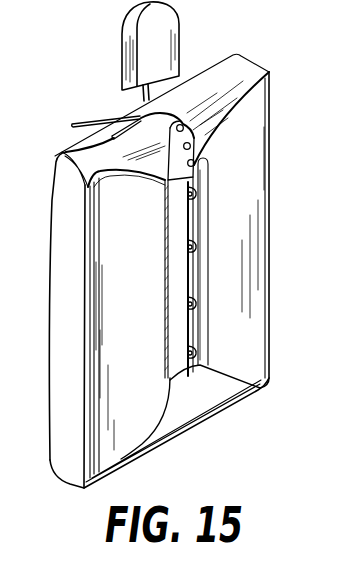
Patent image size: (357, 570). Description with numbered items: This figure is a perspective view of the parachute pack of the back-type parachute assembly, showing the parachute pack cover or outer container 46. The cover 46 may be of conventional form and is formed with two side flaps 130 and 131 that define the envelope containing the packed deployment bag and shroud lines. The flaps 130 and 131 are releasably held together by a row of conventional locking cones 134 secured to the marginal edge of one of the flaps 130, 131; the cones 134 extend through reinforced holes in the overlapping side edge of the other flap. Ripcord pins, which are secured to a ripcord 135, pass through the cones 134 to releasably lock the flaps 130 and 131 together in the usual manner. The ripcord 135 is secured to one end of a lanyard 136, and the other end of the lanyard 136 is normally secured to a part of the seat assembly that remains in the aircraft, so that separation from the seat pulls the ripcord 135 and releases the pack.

The parachute pack cover 46 is at (276, 73).
The side flap 130 is at (132, 334).
The side flap 131 is at (244, 215).
The locking cones 134 is at (185, 249).
The ripcord 135 is at (113, 118).
The lanyard 136 is at (66, 146).